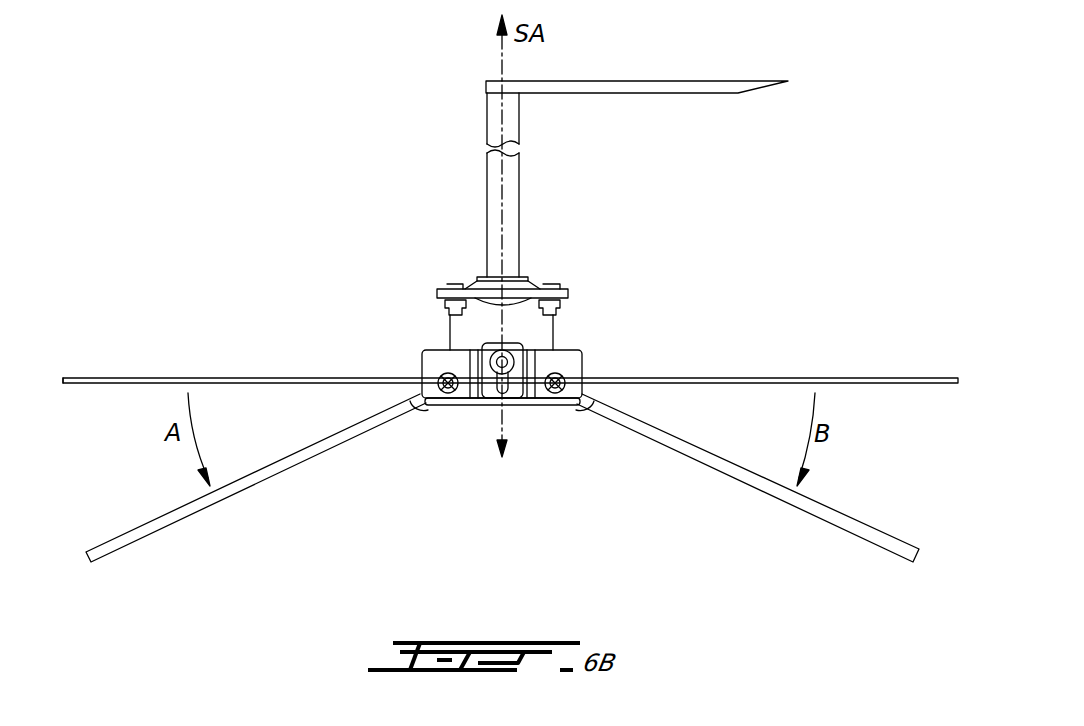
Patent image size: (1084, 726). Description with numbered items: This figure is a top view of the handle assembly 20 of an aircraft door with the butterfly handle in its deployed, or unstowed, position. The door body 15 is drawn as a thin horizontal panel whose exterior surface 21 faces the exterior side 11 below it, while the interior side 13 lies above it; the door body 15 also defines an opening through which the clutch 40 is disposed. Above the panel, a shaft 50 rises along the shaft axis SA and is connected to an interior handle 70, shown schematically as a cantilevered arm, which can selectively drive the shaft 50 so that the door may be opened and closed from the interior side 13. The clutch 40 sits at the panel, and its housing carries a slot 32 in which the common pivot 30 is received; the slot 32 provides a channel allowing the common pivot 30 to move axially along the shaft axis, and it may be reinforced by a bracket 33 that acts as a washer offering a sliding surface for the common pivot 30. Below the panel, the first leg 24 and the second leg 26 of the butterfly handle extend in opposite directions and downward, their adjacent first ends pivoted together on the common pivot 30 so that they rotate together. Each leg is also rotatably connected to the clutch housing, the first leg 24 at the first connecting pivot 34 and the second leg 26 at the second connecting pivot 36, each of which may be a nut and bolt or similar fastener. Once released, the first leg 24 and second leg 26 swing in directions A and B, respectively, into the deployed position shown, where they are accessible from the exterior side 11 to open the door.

The exterior side 11 is at (210, 588).
The interior side 13 is at (206, 233).
The door body 15 is at (197, 378).
The handle assembly 20 is at (802, 267).
The exterior surface 21 is at (137, 388).
The first leg 24 is at (270, 482).
The second leg 26 is at (708, 477).
The common pivot 30 is at (497, 372).
The slot 32 is at (515, 378).
The bracket 33 is at (515, 393).
The first connecting pivot 34 is at (450, 400).
The second connecting pivot 36 is at (555, 397).
The clutch 40 is at (560, 328).
The shaft 50 is at (519, 253).
The interior handle 70 is at (703, 93).